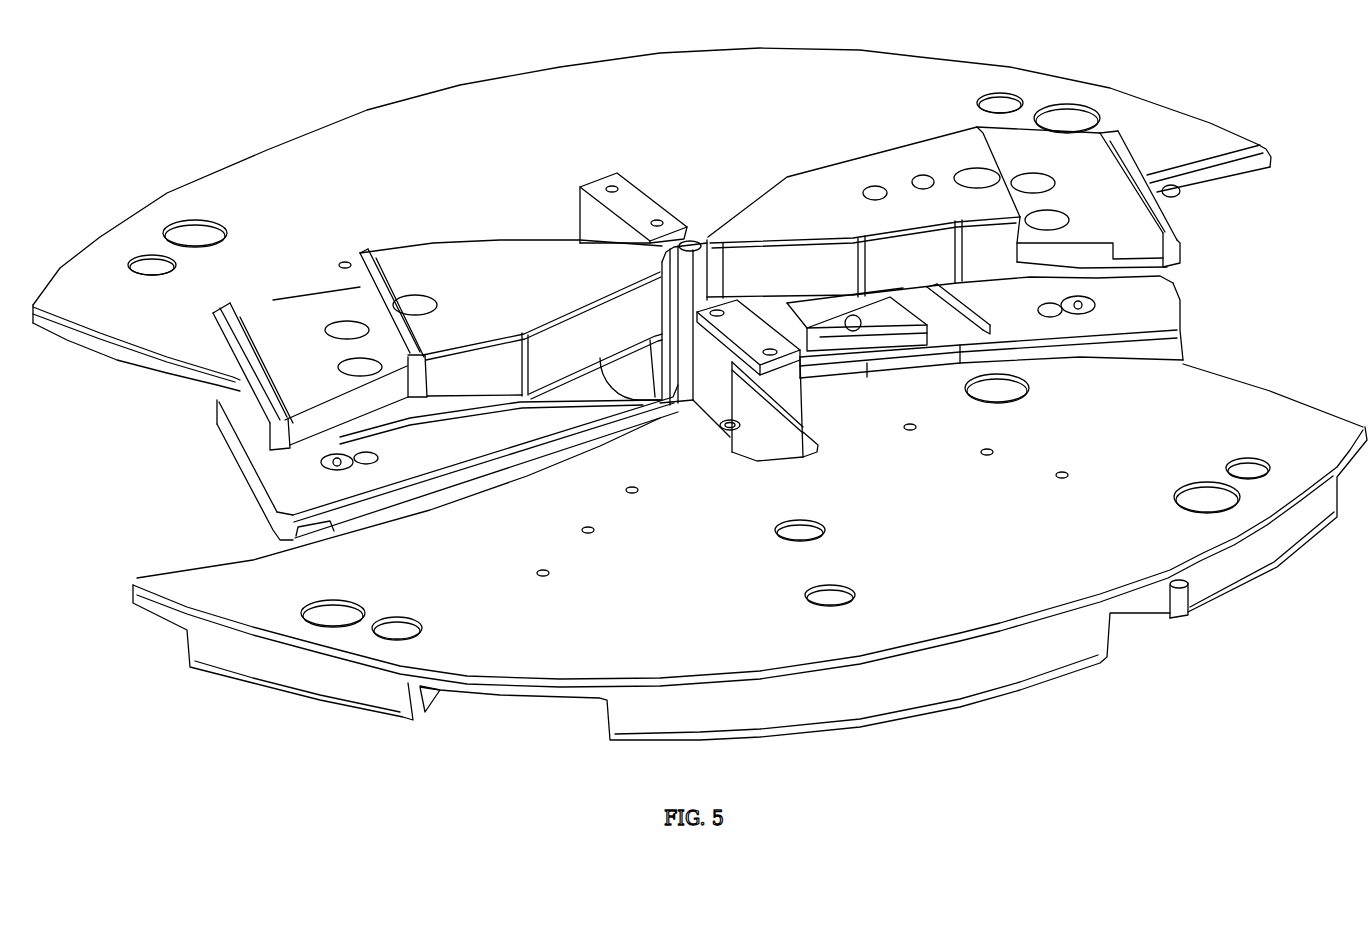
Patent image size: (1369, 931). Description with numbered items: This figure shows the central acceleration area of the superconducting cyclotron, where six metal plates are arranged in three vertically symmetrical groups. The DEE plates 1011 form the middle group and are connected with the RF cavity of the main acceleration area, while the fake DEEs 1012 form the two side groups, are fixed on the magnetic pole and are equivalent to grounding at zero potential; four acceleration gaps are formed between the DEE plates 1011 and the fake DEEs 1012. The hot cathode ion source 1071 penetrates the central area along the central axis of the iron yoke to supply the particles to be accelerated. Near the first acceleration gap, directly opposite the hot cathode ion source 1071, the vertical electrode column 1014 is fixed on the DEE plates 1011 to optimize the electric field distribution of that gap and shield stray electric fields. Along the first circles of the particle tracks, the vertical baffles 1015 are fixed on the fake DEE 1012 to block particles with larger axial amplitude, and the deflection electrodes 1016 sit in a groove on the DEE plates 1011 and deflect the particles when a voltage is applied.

The DEE plates 1011 is at (503, 433).
The fake DEEs 1012 is at (1183, 398).
The vertical electrode column 1014 is at (640, 370).
The vertical baffles 1015 is at (780, 420).
The deflection electrodes 1016 is at (890, 313).
The hot cathode ion source 1071 is at (693, 287).